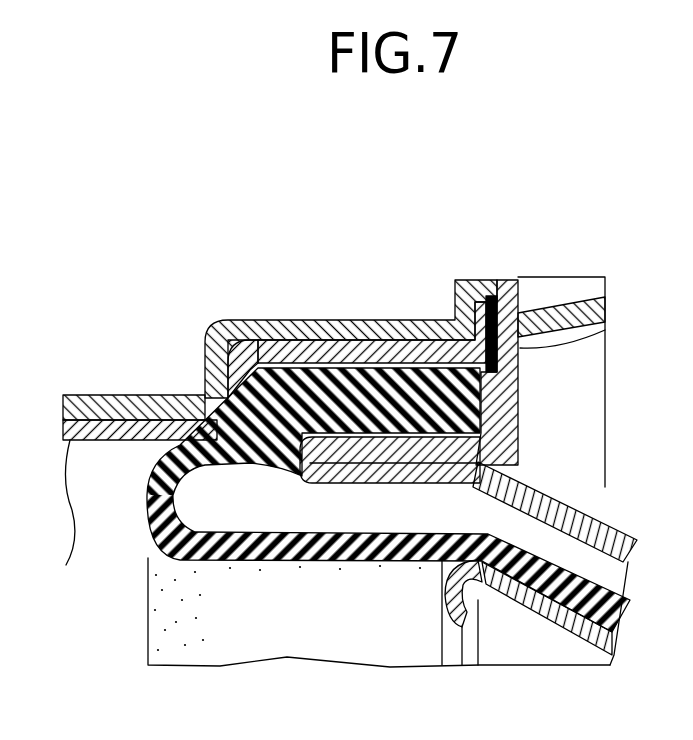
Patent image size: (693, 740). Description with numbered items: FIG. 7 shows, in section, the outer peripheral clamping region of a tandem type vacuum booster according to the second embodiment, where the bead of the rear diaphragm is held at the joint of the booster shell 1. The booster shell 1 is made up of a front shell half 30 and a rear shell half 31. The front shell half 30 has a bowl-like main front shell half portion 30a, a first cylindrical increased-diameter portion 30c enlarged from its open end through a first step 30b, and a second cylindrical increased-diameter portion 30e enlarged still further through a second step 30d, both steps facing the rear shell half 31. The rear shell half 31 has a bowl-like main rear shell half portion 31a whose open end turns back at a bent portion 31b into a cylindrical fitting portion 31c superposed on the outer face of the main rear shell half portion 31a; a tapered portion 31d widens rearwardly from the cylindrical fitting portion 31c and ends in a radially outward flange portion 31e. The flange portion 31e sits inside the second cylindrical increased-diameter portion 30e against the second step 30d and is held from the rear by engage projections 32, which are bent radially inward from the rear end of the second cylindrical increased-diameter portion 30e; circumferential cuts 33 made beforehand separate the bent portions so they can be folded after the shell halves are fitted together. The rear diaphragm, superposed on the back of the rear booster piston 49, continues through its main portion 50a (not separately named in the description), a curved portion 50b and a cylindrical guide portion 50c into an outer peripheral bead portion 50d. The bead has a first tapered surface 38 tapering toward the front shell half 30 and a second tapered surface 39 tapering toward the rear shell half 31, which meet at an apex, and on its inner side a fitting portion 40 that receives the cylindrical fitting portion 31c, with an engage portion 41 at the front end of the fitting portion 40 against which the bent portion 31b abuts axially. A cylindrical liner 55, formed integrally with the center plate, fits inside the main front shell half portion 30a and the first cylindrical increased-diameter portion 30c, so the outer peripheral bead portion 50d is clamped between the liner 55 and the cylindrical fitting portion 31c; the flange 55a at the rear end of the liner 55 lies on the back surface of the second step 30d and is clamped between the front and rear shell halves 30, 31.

The booster shell 1 is at (422, 220).
The front shell half 30 is at (355, 310).
The main front shell half portion 30a is at (148, 420).
The first step 30b is at (205, 360).
The first cylindrical increased-diameter portion 30c is at (337, 318).
The second step 30d is at (455, 318).
The second cylindrical increased-diameter portion 30e is at (505, 280).
The rear shell half 31 is at (407, 345).
The main rear shell half portion 31a is at (598, 522).
The bent portion 31b is at (297, 470).
The cylindrical fitting portion 31c is at (379, 612).
The tapered portion 31d is at (497, 416).
The flange portion 31e is at (600, 336).
The engage projections 32 is at (587, 292).
The cuts 33 is at (523, 288).
The first tapered surface 38 is at (248, 468).
The second tapered surface 39 is at (508, 366).
The fitting portion 40 is at (292, 368).
The engage portion 41 is at (343, 440).
The rear booster piston 49 is at (522, 612).
The seal portion 50a is at (535, 605).
The curved portion 50b is at (149, 497).
The cylindrical guide portion 50c is at (192, 372).
The outer peripheral bead portion 50d is at (497, 445).
The cylindrical liner 55 is at (95, 395).
The flange 55a is at (490, 296).